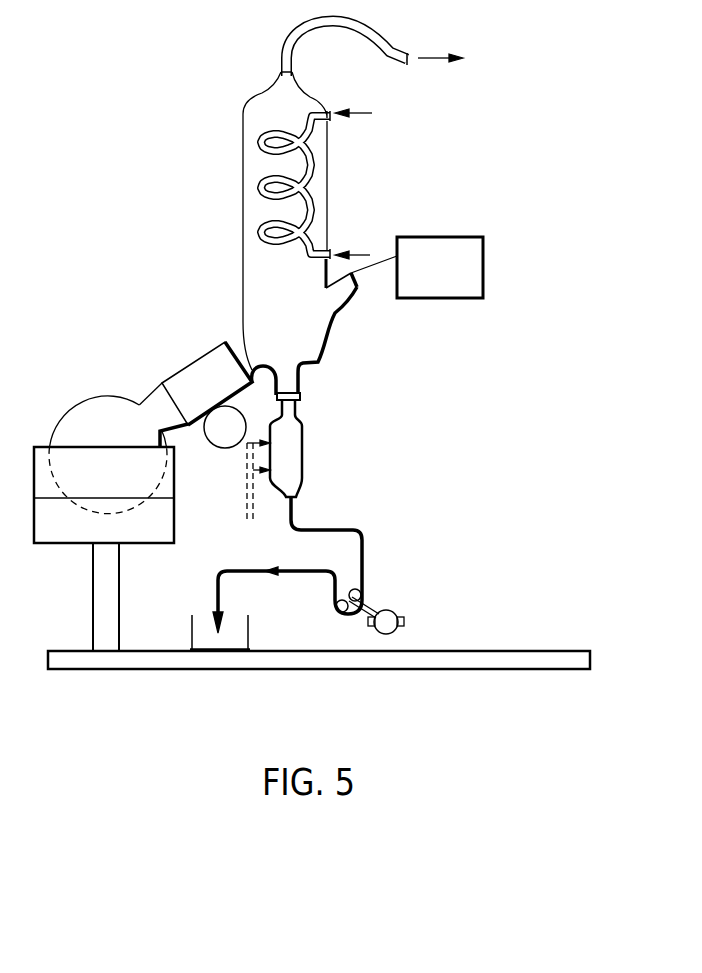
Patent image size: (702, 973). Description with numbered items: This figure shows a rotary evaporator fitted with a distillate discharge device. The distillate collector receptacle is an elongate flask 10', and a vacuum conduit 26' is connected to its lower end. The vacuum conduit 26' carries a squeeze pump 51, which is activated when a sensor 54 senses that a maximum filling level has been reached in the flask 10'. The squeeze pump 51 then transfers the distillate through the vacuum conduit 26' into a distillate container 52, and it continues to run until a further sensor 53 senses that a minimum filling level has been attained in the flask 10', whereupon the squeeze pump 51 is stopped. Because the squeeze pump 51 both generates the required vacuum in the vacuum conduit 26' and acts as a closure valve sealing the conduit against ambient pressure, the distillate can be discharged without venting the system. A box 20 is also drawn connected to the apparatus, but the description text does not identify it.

The control unit 20 is at (421, 234).
The sensor 54 is at (232, 392).
The sensor 53 is at (262, 474).
The distillate container 52 is at (190, 630).
The squeeze pump 51 is at (398, 607).
The elongate flask 10' is at (341, 448).
The vacuum conduit 26' is at (312, 539).